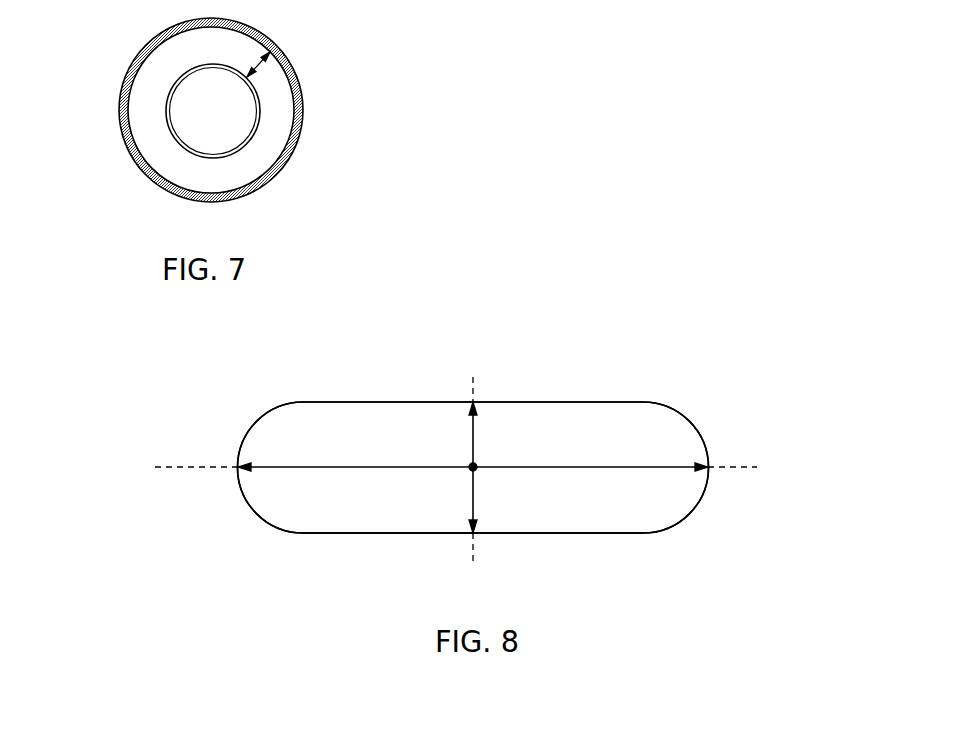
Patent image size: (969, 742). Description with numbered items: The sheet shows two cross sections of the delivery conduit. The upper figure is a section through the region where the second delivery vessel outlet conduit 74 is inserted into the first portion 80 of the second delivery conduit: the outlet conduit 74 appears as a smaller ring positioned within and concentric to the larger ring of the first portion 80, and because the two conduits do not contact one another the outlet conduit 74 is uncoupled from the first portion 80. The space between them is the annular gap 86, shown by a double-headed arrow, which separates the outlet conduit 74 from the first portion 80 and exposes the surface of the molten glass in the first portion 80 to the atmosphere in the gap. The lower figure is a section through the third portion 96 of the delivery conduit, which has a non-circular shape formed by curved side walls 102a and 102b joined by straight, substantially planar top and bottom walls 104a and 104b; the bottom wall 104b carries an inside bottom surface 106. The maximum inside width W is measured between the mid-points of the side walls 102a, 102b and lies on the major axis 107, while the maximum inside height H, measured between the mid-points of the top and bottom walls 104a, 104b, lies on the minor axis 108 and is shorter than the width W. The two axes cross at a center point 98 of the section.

In FIG. 7, the first portion 80 is at (135, 61).
In FIG. 7, the second delivery vessel outlet conduit 74 is at (250, 140).
In FIG. 7, the annular gap 86 is at (262, 66).
In FIG. 8, the third portion 96 is at (715, 404).
In FIG. 8, the center point 98 is at (475, 469).
In FIG. 8, the curved side wall 102a is at (245, 441).
In FIG. 8, the curved side wall 102b is at (700, 432).
In FIG. 8, the top wall 104a is at (402, 398).
In FIG. 8, the bottom wall 104b is at (521, 540).
In FIG. 8, the inside bottom surface 106 is at (433, 533).
In FIG. 8, the major axis 107 is at (200, 469).
In FIG. 8, the minor axis 108 is at (476, 388).
In FIG. 8, the maximum inside height H is at (473, 437).
In FIG. 8, the maximum inside width W is at (380, 467).